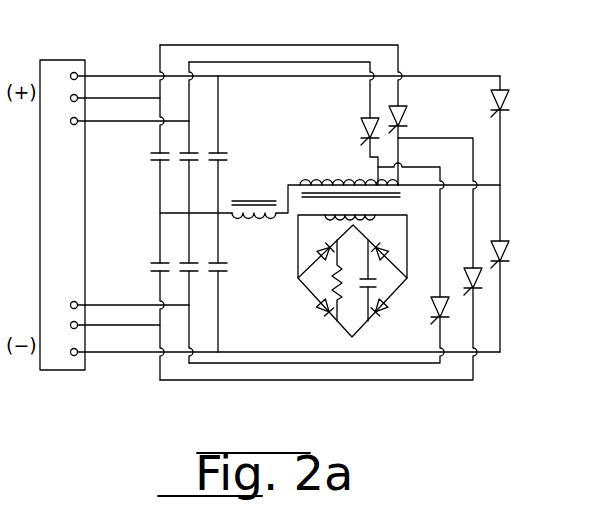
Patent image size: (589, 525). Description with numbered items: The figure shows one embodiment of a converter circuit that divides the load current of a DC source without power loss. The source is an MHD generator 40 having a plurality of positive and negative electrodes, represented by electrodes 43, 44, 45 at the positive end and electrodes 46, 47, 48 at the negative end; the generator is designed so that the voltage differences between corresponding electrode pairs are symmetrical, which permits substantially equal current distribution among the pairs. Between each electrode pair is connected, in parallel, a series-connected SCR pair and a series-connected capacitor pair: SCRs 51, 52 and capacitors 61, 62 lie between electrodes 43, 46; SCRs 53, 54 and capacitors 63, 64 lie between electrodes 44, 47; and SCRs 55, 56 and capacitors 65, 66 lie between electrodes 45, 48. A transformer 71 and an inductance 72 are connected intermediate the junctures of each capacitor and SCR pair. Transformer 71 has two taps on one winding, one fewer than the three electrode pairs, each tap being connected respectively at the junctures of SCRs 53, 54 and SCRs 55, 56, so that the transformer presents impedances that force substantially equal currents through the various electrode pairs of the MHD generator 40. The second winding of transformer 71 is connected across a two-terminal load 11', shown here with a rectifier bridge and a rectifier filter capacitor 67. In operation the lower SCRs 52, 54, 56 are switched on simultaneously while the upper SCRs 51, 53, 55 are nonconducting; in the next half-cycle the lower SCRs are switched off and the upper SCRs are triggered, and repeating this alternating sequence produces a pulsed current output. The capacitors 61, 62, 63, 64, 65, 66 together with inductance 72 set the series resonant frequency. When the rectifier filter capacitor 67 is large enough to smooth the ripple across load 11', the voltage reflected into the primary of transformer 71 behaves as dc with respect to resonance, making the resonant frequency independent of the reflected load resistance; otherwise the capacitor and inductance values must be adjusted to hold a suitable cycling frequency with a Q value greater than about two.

The MHD generator 40 is at (85, 214).
The electrode 43 is at (74, 72).
The electrode 44 is at (70, 99).
The electrode 45 is at (70, 122).
The electrode 46 is at (74, 358).
The electrode 47 is at (70, 325).
The electrode 48 is at (70, 306).
The SCR 51 is at (508, 97).
The SCR 52 is at (503, 242).
The SCR 53 is at (405, 112).
The SCR 54 is at (479, 280).
The SCR 55 is at (361, 126).
The SCR 56 is at (446, 308).
The capacitor 61 is at (226, 155).
The capacitor 62 is at (226, 266).
The capacitor 63 is at (155, 153).
The capacitor 64 is at (155, 265).
The capacitor 65 is at (194, 152).
The capacitor 66 is at (192, 274).
The rectifier filter capacitor 67 is at (371, 292).
The transformer 71 is at (318, 182).
The inductance 72 is at (256, 208).
The load 11' is at (341, 285).